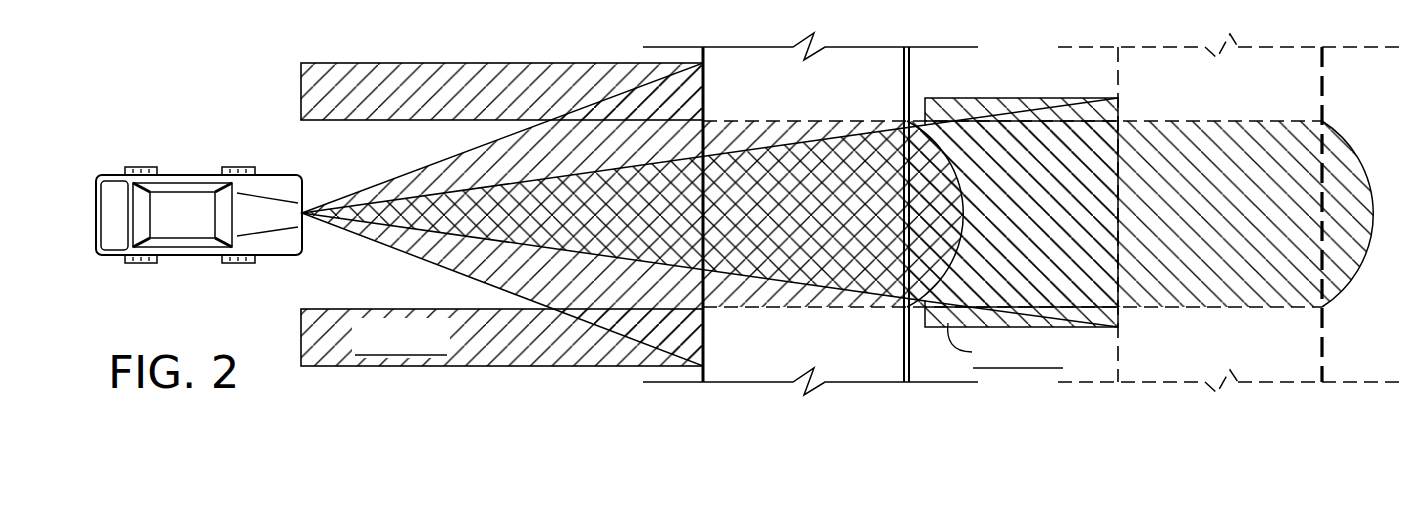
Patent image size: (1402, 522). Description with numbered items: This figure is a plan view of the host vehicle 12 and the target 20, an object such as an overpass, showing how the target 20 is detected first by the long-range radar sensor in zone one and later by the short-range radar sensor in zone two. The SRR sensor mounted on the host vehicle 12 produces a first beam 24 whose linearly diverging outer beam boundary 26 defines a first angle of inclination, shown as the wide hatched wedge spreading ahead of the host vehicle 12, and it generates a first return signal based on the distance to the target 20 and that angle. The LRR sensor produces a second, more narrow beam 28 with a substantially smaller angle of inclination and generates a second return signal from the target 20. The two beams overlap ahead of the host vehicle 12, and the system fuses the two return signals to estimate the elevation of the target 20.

The host vehicle 12 is at (198, 218).
The target 20 is at (1182, 62).
The first beam 24 is at (605, 297).
The outer beam boundary 26 is at (640, 163).
The second beam 28 is at (1040, 232).